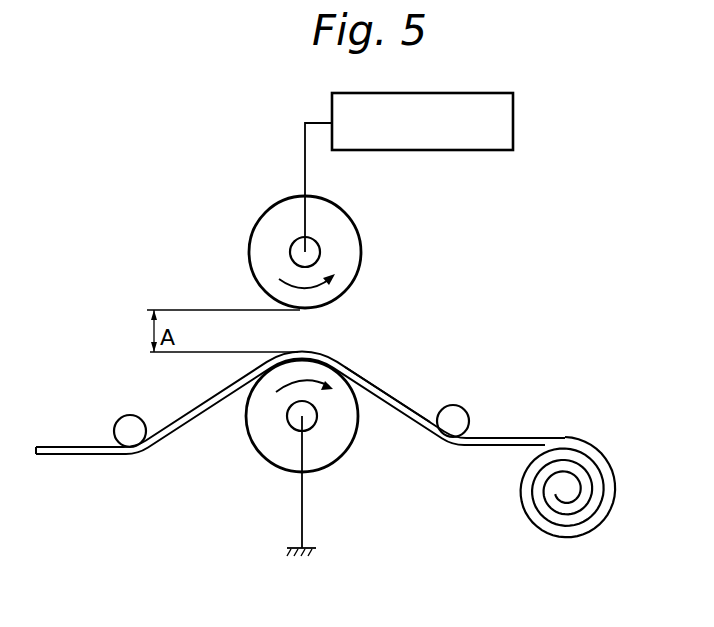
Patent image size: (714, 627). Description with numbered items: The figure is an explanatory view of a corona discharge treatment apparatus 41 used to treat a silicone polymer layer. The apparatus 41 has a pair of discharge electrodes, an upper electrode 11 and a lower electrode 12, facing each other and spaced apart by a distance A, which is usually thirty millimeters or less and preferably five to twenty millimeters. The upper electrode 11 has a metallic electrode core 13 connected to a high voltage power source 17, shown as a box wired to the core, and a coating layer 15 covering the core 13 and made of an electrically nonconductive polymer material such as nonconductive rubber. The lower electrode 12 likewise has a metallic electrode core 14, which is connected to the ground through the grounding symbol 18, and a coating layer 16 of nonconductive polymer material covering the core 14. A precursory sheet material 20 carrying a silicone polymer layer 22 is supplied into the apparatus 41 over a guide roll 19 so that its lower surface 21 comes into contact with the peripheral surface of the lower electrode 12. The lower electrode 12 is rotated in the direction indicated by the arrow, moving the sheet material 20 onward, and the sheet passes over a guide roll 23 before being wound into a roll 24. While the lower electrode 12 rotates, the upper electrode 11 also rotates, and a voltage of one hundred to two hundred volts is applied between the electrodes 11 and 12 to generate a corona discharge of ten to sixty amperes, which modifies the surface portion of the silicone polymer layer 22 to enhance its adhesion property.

The upper electrode 11 is at (406, 240).
The lower electrode 12 is at (353, 459).
The metallic electrode core 13 is at (320, 248).
The metallic electrode core 14 is at (318, 412).
The coating layer 15 is at (352, 263).
The coating layer 16 is at (328, 455).
The high voltage power source 17 is at (513, 106).
The ground 18 is at (316, 550).
The guide roll 19 is at (129, 415).
The precursory sheet material 20 is at (60, 446).
The lower surface 21 is at (89, 457).
The silicone polymer layer 22 is at (357, 377).
The guide roll 23 is at (452, 404).
The roll 24 is at (616, 500).
The corona discharge treatment apparatus 41 is at (484, 241).